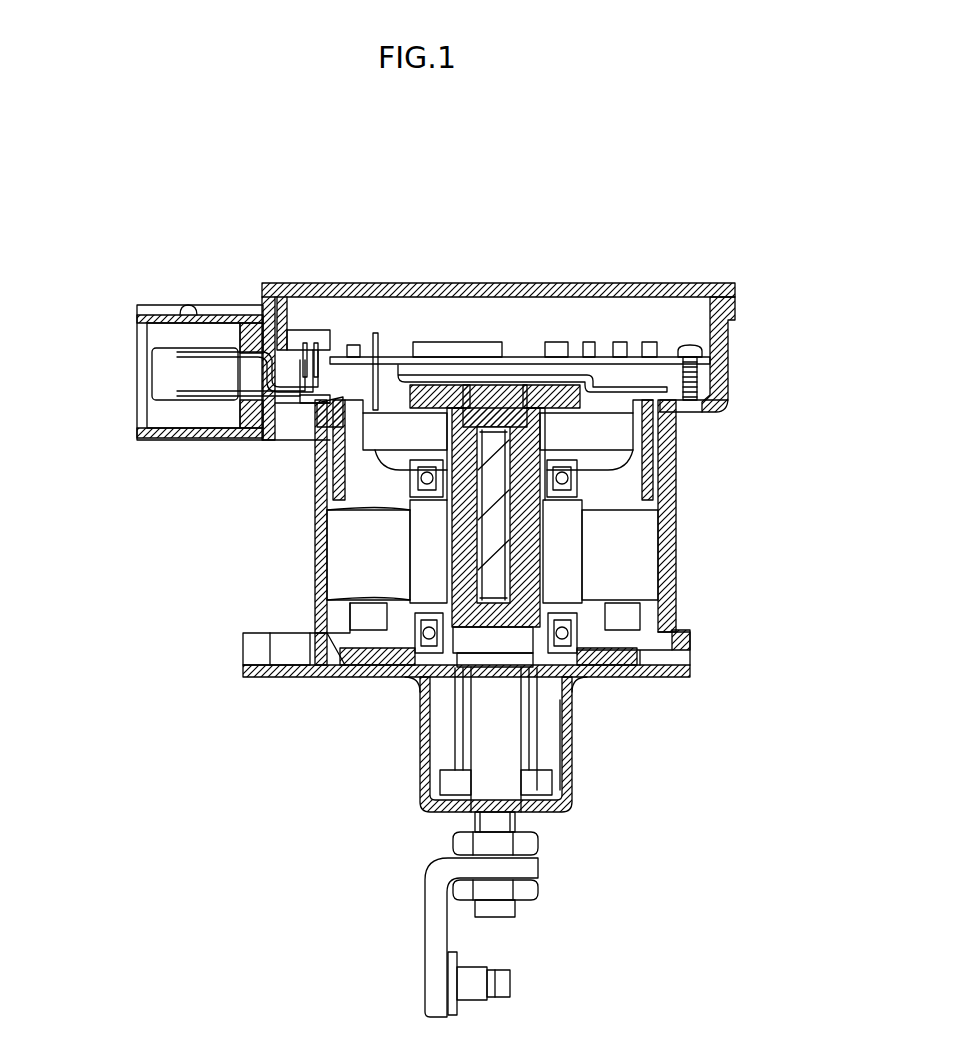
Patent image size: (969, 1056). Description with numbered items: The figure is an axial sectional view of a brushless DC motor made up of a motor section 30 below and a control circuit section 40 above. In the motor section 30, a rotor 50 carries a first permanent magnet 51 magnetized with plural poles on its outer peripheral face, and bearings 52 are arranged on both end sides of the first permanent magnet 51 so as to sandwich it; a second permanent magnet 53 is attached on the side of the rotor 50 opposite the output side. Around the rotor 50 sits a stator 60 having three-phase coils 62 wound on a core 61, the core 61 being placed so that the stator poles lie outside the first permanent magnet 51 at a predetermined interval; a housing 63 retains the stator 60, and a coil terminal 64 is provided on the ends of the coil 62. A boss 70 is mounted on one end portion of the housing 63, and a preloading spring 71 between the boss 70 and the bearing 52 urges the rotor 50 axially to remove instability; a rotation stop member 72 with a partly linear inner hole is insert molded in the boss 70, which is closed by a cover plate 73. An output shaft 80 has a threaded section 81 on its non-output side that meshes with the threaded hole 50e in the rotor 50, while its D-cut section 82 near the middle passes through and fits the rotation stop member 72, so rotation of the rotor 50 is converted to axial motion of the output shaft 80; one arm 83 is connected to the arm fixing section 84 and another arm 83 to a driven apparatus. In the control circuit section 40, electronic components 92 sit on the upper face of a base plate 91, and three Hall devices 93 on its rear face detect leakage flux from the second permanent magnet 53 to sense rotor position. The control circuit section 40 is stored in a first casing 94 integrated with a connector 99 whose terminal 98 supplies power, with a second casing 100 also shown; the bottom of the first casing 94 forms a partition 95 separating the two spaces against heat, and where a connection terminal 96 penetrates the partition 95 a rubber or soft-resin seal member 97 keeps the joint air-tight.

The motor section 30 is at (720, 567).
The control circuit section 40 is at (773, 268).
The rotor 50 is at (465, 580).
The threaded hole 50e is at (400, 528).
The first permanent magnet 51 is at (420, 545).
The bearing 52 is at (320, 632).
The second permanent magnet 53 is at (322, 435).
The stator 60 is at (668, 527).
The core 61 is at (645, 575).
The coil 62 is at (683, 637).
The housing 63 is at (677, 463).
The coil terminal 64 is at (338, 460).
The boss 70 is at (437, 760).
The preloading spring 71 is at (408, 677).
The rotation stop member 72 is at (543, 783).
The cover plate 73 is at (568, 748).
The output shaft 80 is at (520, 925).
The threaded section 81 is at (610, 676).
The D-cut section 82 is at (542, 717).
The arm 83 is at (425, 943).
The arm fixing section 84 is at (473, 823).
The base plate 91 is at (540, 357).
The electronic component 92 is at (672, 327).
The Hall device 93 is at (428, 342).
The first casing 94 is at (730, 377).
The partition 95 is at (473, 375).
The connection terminal 96 is at (375, 333).
The seal member 97 is at (322, 343).
The terminal 98 is at (192, 372).
The connector 99 is at (138, 322).
The second casing 100 is at (514, 385).